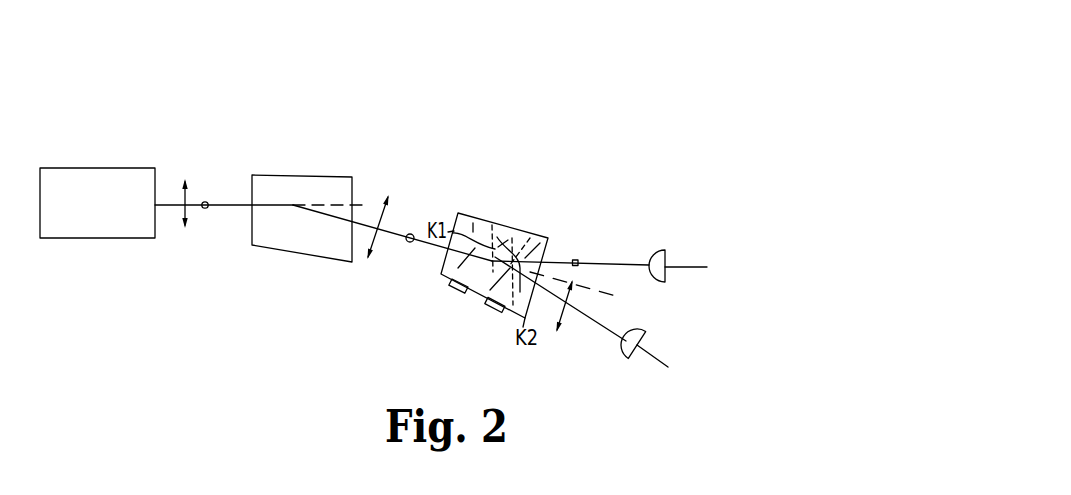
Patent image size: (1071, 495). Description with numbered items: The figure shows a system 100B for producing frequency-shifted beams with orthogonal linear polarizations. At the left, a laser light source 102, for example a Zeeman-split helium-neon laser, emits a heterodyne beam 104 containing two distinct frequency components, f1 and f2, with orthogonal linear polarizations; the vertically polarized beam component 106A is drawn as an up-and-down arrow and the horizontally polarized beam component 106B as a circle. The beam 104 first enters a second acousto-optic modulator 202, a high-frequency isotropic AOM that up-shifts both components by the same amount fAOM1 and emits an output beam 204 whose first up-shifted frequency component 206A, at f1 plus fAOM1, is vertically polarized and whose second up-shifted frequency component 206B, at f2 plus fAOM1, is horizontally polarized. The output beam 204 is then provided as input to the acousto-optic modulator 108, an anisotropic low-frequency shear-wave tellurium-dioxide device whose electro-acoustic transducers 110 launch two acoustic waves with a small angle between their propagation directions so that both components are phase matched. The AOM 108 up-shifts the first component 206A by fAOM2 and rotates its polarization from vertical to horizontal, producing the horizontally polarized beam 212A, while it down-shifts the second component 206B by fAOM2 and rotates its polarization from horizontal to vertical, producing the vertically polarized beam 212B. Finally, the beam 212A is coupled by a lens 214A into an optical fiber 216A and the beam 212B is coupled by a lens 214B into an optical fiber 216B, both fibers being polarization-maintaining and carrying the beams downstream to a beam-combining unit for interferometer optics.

The system 100B is at (231, 47).
The laser light source 102 is at (103, 168).
The heterodyne beam 104 is at (167, 200).
The beam component 106A is at (182, 208).
The beam component 106B is at (207, 210).
The second acousto-optic modulator 202 is at (273, 175).
The output beam 204 is at (363, 217).
The first up-shifted frequency component 206A is at (372, 217).
The second up-shifted frequency component 206B is at (433, 207).
The acousto-optic modulator 108 is at (444, 259).
The electro-acoustic transducers 110 is at (491, 308).
The beam 212A is at (575, 260).
The beam 212B is at (568, 300).
The lens 214A is at (668, 254).
The lens 214B is at (627, 361).
The optical fiber 216A is at (687, 268).
The optical fiber 216B is at (660, 361).